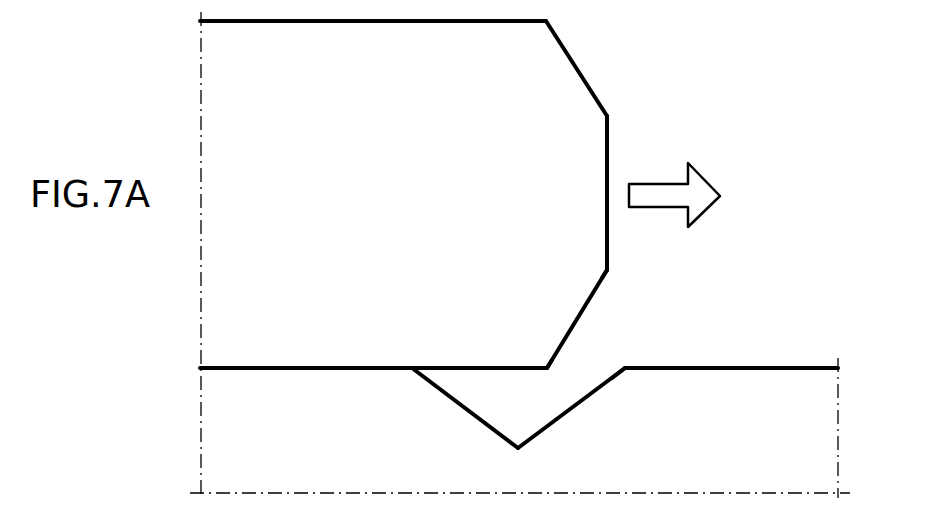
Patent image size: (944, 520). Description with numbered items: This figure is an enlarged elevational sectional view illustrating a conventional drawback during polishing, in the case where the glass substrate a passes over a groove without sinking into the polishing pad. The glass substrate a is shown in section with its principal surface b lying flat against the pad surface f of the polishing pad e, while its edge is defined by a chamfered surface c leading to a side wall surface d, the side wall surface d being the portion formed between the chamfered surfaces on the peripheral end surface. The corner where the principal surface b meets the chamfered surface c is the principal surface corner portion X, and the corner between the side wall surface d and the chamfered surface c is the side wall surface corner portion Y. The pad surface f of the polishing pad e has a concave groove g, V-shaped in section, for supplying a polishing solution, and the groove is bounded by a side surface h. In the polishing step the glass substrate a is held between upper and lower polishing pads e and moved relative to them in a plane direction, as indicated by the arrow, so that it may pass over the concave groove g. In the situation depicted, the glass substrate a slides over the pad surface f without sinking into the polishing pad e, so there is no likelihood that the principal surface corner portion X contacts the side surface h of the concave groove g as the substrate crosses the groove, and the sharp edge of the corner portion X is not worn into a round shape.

The glass substrate a is at (608, 79).
The principal surface b is at (478, 366).
The chamfered surface c is at (577, 318).
The side wall surface d is at (610, 148).
The polishing pad e is at (773, 351).
The pad surface f is at (700, 366).
The concave groove g is at (618, 354).
The side surface of the concave groove h is at (565, 422).
The principal surface corner portion X is at (543, 348).
The side wall surface corner portion Y is at (596, 257).